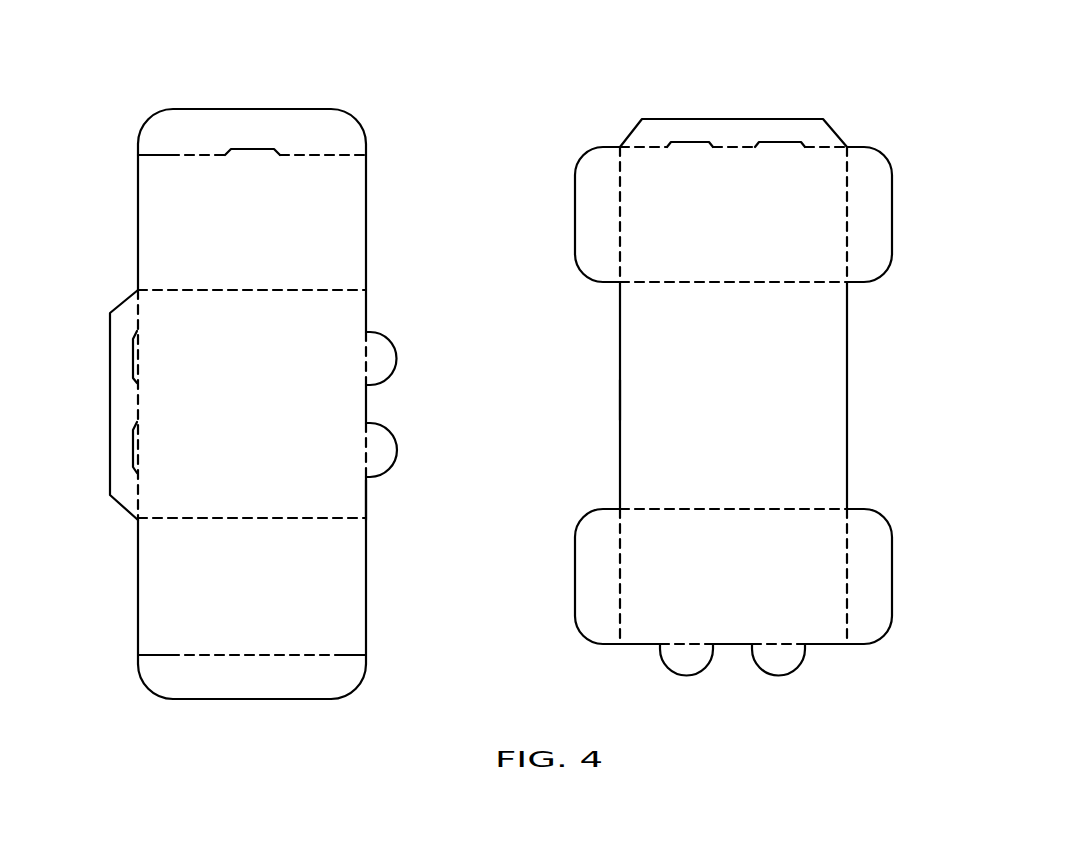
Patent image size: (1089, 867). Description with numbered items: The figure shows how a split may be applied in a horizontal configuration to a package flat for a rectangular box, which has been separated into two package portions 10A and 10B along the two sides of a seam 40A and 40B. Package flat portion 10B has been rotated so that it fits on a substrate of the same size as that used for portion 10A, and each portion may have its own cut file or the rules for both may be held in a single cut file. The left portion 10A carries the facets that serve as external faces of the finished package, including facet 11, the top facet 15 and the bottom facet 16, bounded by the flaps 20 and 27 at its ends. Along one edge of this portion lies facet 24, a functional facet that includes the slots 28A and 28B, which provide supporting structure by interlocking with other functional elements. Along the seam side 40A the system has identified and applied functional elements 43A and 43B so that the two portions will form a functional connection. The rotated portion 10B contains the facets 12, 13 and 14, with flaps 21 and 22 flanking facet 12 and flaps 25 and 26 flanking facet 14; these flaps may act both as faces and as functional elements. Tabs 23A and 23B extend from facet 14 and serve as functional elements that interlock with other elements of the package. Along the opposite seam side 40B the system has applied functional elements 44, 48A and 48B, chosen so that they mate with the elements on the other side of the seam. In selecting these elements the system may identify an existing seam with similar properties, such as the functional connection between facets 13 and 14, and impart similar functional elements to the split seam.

The package portion 10A is at (396, 91).
The package flat portion 10B is at (990, 125).
The flap 20 is at (297, 118).
The facet 15 is at (217, 222).
The facet 16 is at (210, 592).
The facet 24 is at (123, 400).
The slot 28A is at (133, 340).
The slot 28B is at (135, 438).
The facet 11 is at (185, 503).
The flap 27 is at (313, 680).
The functional element 43A is at (390, 337).
The functional element 43B is at (393, 440).
The seam side 40A is at (367, 494).
The seam side 40B is at (638, 146).
The functional element 44 is at (840, 132).
The functional element 48A is at (773, 142).
The functional element 48B is at (688, 142).
The flap 21 is at (880, 218).
The flap 22 is at (598, 268).
The facet 12 is at (785, 253).
The facet 13 is at (637, 410).
The flap 25 is at (592, 628).
The flap 26 is at (870, 617).
The facet 14 is at (652, 623).
The tab 23A is at (777, 658).
The tab 23B is at (688, 662).